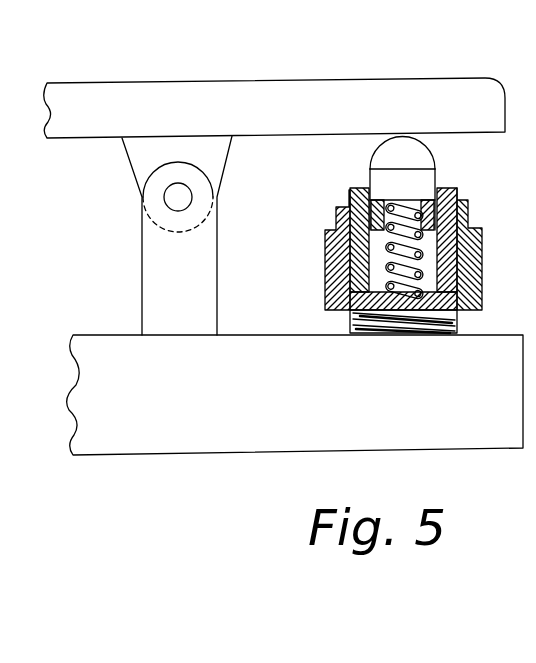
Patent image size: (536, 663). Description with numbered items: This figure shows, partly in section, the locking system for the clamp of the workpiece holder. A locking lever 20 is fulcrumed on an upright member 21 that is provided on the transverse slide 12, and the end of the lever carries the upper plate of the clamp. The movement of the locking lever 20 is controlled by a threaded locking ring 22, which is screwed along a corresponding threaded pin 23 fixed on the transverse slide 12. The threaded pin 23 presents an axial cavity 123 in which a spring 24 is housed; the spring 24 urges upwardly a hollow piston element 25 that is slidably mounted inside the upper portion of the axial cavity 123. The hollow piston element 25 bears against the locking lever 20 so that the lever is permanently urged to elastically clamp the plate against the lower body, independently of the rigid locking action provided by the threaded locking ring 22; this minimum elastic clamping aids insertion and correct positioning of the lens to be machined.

The locking lever 20 is at (241, 83).
The transverse slide 12 is at (192, 438).
The upright member 21 is at (158, 208).
The threaded locking ring 22 is at (485, 260).
The spring 24 is at (465, 222).
The threaded pin 23 is at (405, 332).
The hollow piston element 25 is at (422, 153).
The axial cavity 123 is at (345, 292).